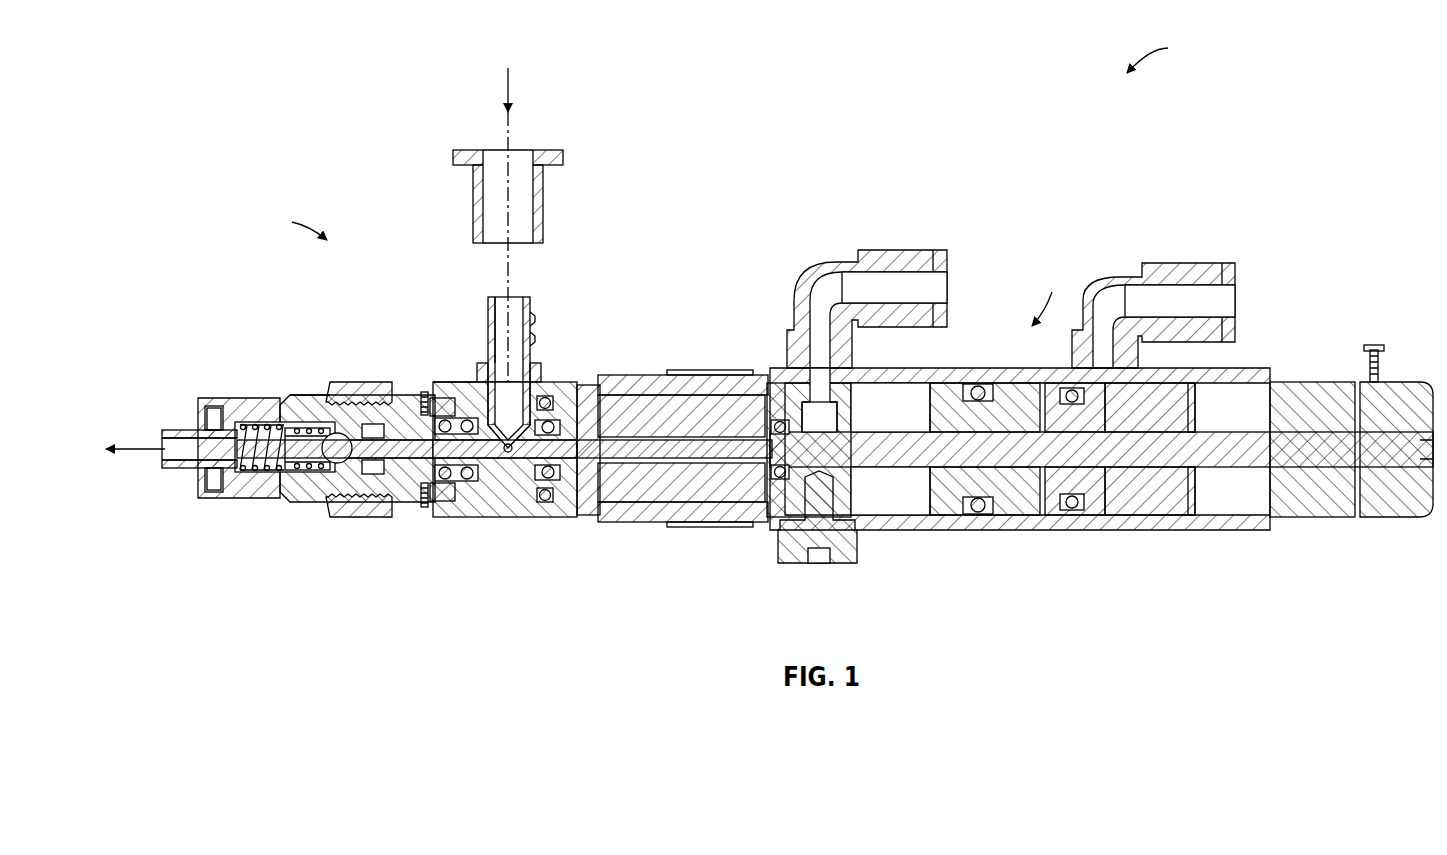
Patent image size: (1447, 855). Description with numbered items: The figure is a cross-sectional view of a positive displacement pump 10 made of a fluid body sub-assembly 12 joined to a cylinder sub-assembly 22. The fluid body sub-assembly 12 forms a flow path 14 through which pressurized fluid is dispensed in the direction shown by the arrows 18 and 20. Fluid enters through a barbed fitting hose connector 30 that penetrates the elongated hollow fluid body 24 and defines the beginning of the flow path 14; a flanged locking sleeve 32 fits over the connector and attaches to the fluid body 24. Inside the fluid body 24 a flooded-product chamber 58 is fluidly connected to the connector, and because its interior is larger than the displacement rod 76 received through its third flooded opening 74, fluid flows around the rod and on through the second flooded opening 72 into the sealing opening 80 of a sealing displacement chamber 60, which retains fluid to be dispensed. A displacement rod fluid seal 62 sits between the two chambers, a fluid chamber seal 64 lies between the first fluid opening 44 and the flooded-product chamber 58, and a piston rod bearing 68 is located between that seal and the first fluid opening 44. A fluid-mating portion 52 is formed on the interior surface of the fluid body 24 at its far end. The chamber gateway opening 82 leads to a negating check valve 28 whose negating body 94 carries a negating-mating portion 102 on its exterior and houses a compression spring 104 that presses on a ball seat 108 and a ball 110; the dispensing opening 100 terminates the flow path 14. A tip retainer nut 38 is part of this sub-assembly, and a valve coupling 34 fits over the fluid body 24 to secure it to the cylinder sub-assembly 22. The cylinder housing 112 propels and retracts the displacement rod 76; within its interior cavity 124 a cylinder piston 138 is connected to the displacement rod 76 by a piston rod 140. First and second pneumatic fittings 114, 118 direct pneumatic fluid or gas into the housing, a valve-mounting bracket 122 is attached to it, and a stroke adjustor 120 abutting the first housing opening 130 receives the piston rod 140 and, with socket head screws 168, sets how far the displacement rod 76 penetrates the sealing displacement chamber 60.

The positive displacement pump 10 is at (1166, 53).
The fluid body sub-assembly 12 is at (294, 223).
The flow path 14 is at (495, 315).
The arrow 18 is at (512, 80).
The arrow 20 is at (135, 447).
The cylinder sub-assembly 22 is at (1052, 291).
The fluid body 24 is at (540, 430).
The negating check valve 28 is at (210, 420).
The barbed fitting hose connector 30 is at (528, 300).
The flanged locking sleeve 32 is at (552, 150).
The valve coupling 34 is at (695, 370).
The tip retainer nut 38 is at (220, 398).
The first fluid opening 44 is at (672, 378).
The fluid-mating portion 52 is at (358, 382).
The flooded-product chamber 58 is at (512, 458).
The sealing displacement chamber 60 is at (425, 507).
The displacement rod fluid seal 62 is at (445, 501).
The fluid chamber seal 64 is at (590, 400).
The piston rod bearing 68 is at (662, 400).
The second flooded opening 72 is at (475, 490).
The third flooded opening 74 is at (580, 462).
The displacement rod 76 is at (556, 425).
The sealing opening 80 is at (470, 392).
The chamber gateway opening 82 is at (302, 398).
The negating body 94 is at (300, 396).
The dispensing opening 100 is at (160, 457).
The negating-mating portion 102 is at (358, 517).
The compression spring 104 is at (252, 422).
The ball seat 108 is at (300, 468).
The ball 110 is at (330, 462).
The cylinder housing 112 is at (970, 368).
The first pneumatic fitting 114 is at (912, 258).
The second pneumatic fitting 118 is at (1197, 268).
The stroke adjustor 120 is at (1392, 382).
The valve-mounting bracket 122 is at (820, 563).
The interior cavity 124 is at (902, 400).
The first housing opening 130 is at (1280, 382).
The cylinder piston 138 is at (945, 395).
The piston rod 140 is at (780, 435).
The socket head screws 168 is at (1378, 345).